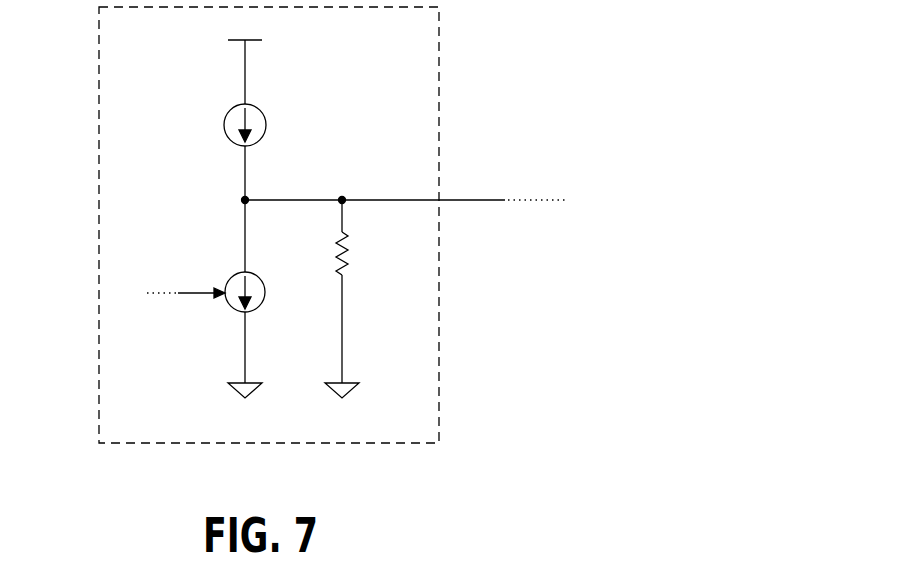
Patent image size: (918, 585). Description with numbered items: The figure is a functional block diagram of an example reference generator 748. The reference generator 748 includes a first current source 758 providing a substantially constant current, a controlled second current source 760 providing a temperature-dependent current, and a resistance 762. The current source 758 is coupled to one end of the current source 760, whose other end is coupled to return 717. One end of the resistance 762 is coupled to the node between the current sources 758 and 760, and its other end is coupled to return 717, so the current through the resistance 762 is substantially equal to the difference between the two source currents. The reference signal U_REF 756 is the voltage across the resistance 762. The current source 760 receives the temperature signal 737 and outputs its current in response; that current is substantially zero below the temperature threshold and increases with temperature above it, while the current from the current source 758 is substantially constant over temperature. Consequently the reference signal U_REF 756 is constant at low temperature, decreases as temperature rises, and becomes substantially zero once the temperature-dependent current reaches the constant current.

The reference generator 748 is at (97, 130).
The current source 758 is at (226, 113).
The reference signal U_REF 756 is at (374, 158).
The current source 760 is at (230, 264).
The temperature signal 737 is at (165, 304).
The resistance 762 is at (362, 263).
The return 717 is at (237, 397).